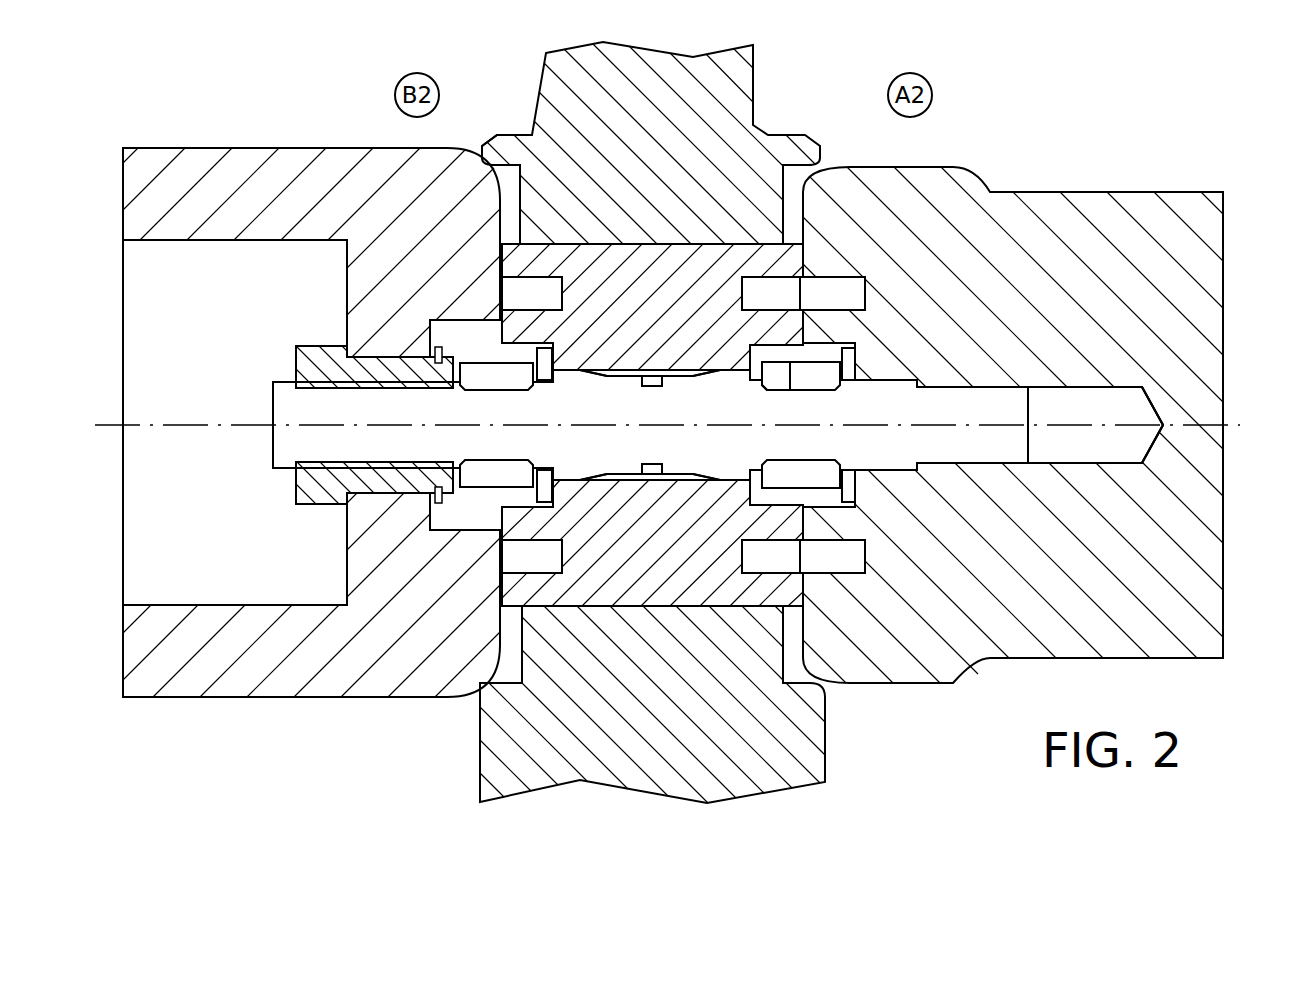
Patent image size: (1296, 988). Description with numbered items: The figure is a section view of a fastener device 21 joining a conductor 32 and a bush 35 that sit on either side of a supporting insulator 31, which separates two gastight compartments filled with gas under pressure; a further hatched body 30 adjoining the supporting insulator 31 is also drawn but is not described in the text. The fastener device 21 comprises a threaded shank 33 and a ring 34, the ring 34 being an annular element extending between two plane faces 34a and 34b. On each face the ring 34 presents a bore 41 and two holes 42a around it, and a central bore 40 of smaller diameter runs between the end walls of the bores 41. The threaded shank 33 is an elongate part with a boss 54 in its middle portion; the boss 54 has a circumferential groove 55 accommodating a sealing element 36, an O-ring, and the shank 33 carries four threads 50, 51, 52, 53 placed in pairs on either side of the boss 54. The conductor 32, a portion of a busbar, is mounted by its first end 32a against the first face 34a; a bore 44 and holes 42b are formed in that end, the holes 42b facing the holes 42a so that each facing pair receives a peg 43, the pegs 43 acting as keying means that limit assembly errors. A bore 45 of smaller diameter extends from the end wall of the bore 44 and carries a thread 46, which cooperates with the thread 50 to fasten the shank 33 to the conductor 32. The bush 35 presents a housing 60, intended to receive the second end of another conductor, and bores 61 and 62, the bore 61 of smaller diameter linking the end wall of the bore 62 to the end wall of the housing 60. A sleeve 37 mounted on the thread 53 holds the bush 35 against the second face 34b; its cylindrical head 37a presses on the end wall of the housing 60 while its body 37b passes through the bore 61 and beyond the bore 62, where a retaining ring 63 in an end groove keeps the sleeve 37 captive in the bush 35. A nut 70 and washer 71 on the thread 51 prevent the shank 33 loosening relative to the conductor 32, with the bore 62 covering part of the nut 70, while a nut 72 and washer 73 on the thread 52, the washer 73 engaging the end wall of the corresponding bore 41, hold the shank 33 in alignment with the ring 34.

The fastener device 21 is at (505, 118).
The lower housing portion 30 is at (638, 607).
The supporting insulator 31 is at (673, 88).
The conductor 32 is at (1085, 218).
The first end 32a is at (1200, 250).
The threaded shank 33 is at (300, 437).
The ring 34 is at (638, 268).
The first face 34a is at (812, 248).
The second face 34b is at (497, 258).
The bush 35 is at (262, 185).
The sealing element 36 is at (650, 480).
The sleeve 37 is at (327, 490).
The head 37a is at (320, 360).
The body 37b is at (412, 477).
The central bore 40 is at (720, 470).
The bore 41 is at (522, 498).
The holes 42a is at (547, 285).
The holes 42b is at (832, 290).
The peg 43 is at (866, 290).
The bore 44 is at (833, 498).
The bore 45 is at (1085, 443).
The thread 46 is at (973, 387).
The thread 50 is at (985, 435).
The thread 51 is at (777, 376).
The thread 52 is at (496, 386).
The thread 53 is at (393, 356).
The boss 54 is at (627, 376).
The circumferential groove 55 is at (650, 376).
The housing 60 is at (230, 593).
The bore 61 is at (382, 497).
The bore 62 is at (492, 520).
The retaining ring 63 is at (436, 346).
The nut 70 is at (812, 370).
The washer 71 is at (848, 365).
The nut 72 is at (480, 487).
The washer 73 is at (542, 487).